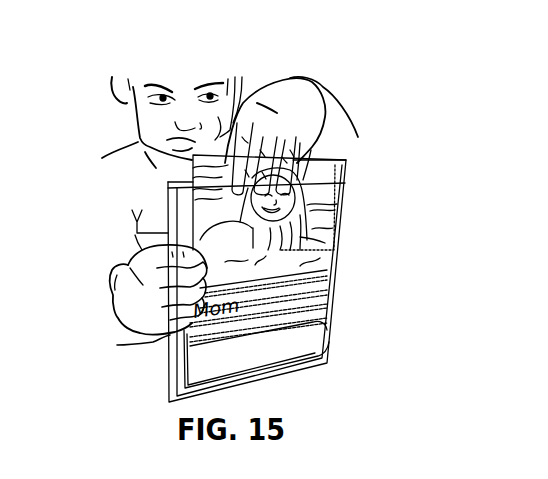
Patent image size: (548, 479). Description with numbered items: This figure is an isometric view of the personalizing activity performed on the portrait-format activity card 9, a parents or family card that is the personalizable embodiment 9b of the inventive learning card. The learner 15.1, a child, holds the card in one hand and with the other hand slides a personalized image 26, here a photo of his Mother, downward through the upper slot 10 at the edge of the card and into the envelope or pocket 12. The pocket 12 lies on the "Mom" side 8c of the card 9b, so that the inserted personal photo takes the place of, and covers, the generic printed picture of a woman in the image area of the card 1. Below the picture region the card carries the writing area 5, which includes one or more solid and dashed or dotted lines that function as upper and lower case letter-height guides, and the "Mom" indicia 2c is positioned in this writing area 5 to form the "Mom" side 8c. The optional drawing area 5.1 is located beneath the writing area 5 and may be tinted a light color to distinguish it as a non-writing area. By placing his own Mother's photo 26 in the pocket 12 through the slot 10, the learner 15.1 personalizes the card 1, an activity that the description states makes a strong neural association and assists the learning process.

The learner 15.1 is at (215, 70).
The frame 1 is at (322, 257).
The activity card 9 is at (163, 371).
The personalizable embodiment of learning card 9b is at (140, 233).
The upper slot 10 is at (172, 187).
The personalized image 26 is at (333, 190).
The envelope or pocket 12 is at (204, 250).
The writing area 5 is at (280, 326).
The drawing area 5.1 is at (293, 350).
The "Mom" side 8c is at (240, 352).
The "Mom" indicia 2c is at (147, 346).